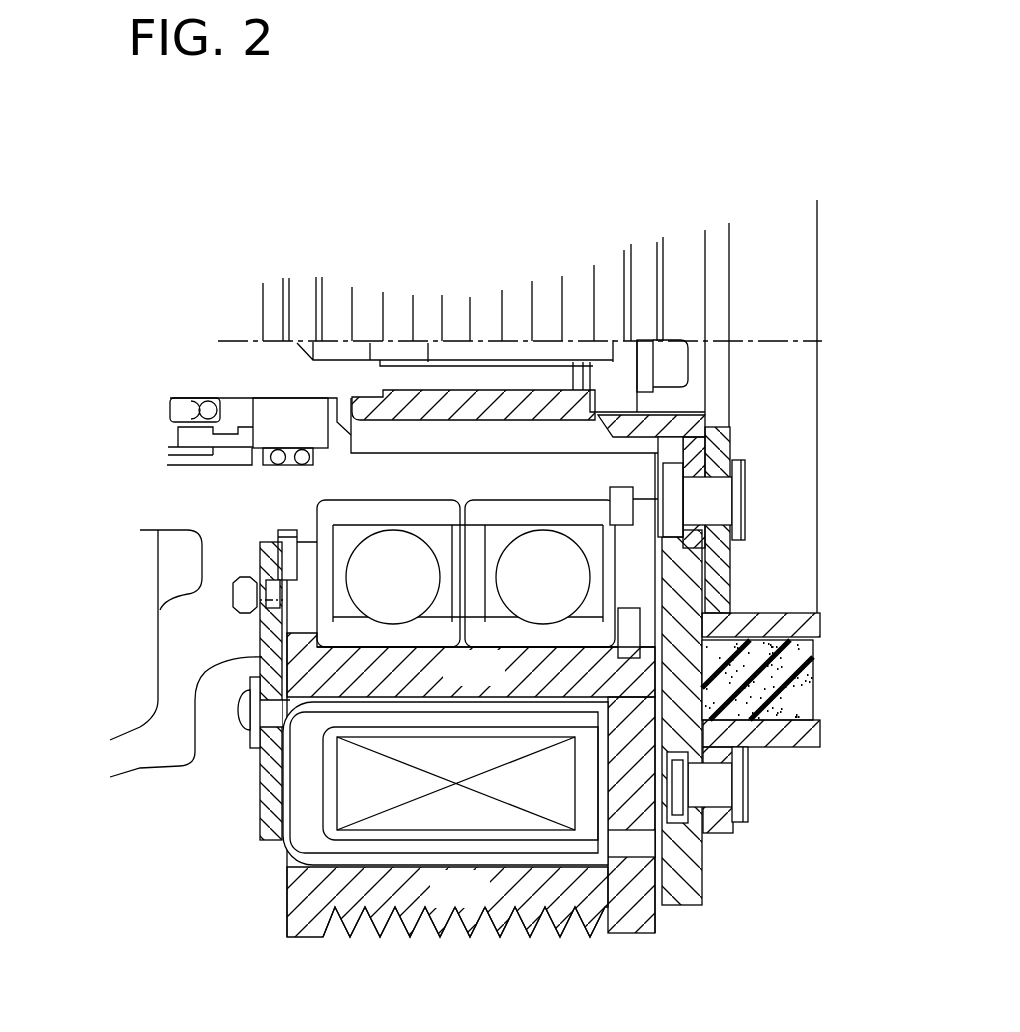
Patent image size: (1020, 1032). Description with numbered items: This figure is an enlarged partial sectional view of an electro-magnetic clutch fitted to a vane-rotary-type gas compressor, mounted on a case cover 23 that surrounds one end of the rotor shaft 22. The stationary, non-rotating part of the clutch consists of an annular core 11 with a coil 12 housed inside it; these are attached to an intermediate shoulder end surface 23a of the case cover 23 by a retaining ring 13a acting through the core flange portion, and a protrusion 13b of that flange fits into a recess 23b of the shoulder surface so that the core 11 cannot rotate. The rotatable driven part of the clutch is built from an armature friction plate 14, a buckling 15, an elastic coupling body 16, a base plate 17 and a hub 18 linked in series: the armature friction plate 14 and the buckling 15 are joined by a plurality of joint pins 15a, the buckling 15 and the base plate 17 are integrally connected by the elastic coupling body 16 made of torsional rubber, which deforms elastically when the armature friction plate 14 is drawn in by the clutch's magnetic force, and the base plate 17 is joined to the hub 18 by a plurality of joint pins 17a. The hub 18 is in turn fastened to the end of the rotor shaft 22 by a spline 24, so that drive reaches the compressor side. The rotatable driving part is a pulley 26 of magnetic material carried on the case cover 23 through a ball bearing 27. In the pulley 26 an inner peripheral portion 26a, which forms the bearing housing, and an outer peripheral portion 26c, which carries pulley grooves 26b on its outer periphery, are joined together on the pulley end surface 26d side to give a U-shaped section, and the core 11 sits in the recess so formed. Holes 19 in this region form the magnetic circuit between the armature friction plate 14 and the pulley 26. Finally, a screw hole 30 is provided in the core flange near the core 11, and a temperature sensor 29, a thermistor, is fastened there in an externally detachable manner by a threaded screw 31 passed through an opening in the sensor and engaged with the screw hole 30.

The annular core 11 is at (298, 845).
The coil 12 is at (542, 797).
The retaining ring 13a is at (300, 555).
The protrusion 13b is at (247, 578).
The armature friction plate 14 is at (693, 880).
The buckling 15 is at (800, 735).
The joint pins 15a is at (717, 782).
The elastic coupling body 16 is at (795, 670).
The base plate 17 is at (795, 550).
The joint pins 17a is at (715, 495).
The hub 18 is at (716, 420).
The holes 19 is at (633, 738).
The rotor shaft 22 is at (240, 368).
The case cover 23 is at (127, 758).
The intermediate shoulder end surface 23a is at (262, 633).
The recess 23b is at (233, 588).
The spline 24 is at (487, 395).
The pulley 26 is at (310, 937).
The inner peripheral portion 26a is at (500, 685).
The pulley grooves 26b is at (420, 940).
The outer peripheral portion 26c is at (488, 906).
The pulley end surface 26d is at (660, 918).
The ball bearing 27 is at (392, 513).
The temperature sensor 29 is at (254, 752).
The screw hole 30 is at (287, 707).
The screw 31 is at (241, 722).